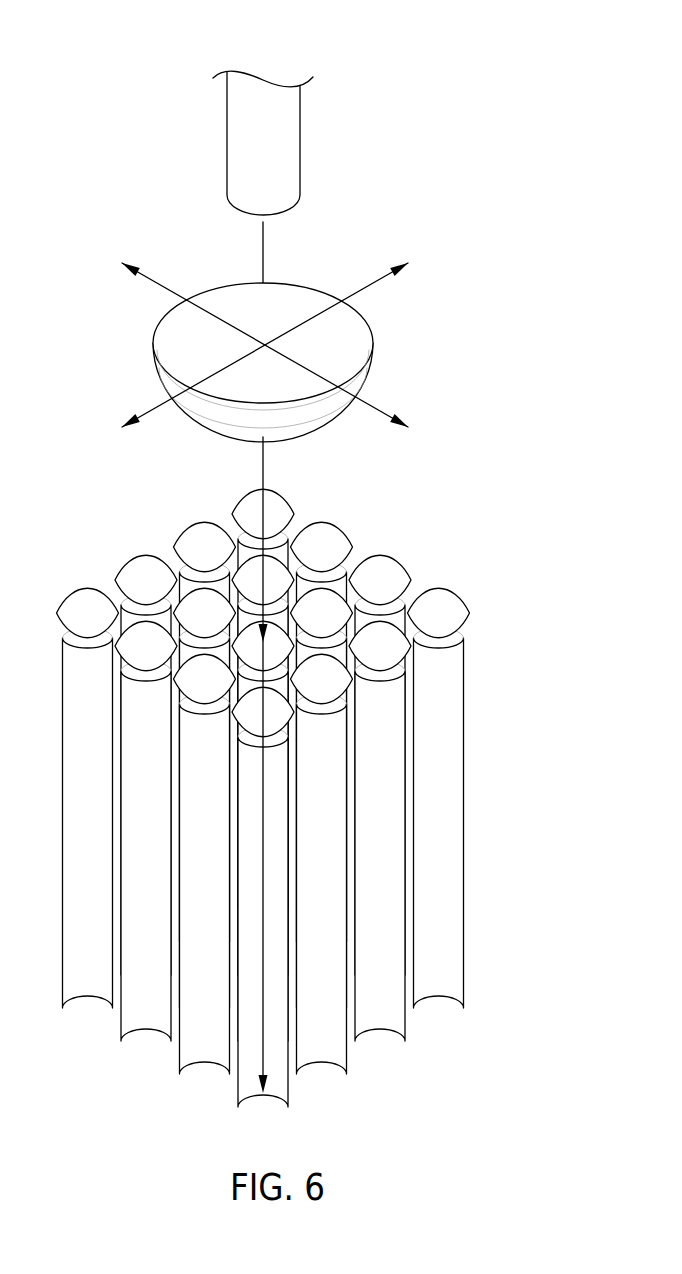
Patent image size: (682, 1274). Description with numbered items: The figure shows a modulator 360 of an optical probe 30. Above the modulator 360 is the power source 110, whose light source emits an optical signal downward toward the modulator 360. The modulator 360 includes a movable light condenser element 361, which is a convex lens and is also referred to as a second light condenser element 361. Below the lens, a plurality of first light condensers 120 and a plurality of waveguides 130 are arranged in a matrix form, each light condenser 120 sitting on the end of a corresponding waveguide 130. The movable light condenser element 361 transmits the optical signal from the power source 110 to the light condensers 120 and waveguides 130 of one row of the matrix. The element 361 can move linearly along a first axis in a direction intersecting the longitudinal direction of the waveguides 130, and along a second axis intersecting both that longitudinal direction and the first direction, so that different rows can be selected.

The optical probe 30 is at (111, 58).
The power source 110 is at (295, 143).
The modulator 360 is at (240, 362).
The movable light condenser element 361 is at (367, 345).
The light condensers 120 is at (455, 600).
The waveguides 130 is at (460, 781).